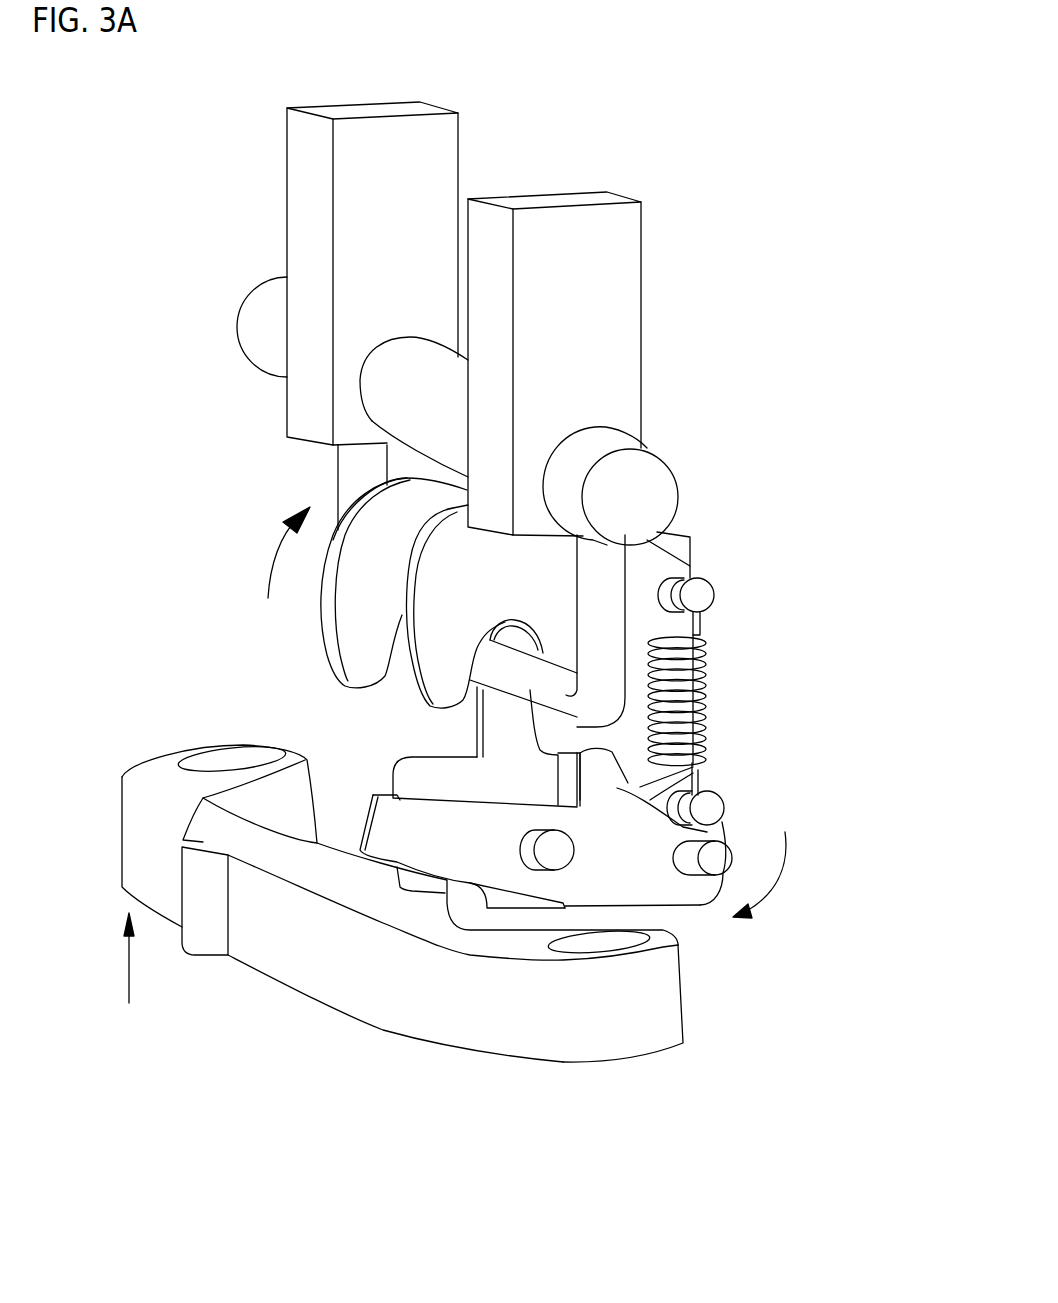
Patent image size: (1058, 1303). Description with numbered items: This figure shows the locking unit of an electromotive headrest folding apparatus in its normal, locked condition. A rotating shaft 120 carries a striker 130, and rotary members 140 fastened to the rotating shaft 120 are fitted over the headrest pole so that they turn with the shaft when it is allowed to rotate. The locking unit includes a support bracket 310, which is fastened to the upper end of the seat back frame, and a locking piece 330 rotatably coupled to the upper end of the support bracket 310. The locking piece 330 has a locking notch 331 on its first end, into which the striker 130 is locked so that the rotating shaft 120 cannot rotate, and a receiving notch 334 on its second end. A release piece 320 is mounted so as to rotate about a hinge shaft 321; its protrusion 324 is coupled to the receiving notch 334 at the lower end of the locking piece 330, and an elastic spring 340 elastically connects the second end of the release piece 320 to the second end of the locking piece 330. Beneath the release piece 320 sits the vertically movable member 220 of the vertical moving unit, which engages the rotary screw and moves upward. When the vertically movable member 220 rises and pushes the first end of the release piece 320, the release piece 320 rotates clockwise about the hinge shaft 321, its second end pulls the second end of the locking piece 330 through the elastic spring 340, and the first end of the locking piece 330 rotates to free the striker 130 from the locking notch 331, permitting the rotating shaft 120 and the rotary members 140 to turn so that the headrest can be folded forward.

The rotating shaft 120 is at (263, 322).
The striker 130 is at (597, 618).
The rotary members 140 is at (607, 317).
The vertically movable member 220 is at (307, 947).
The support bracket 310 is at (487, 782).
The release piece 320 is at (650, 863).
The hinge shaft 321 is at (553, 850).
The protrusion 324 is at (693, 773).
The locking piece 330 is at (697, 622).
The locking notch 331 is at (388, 688).
The receiving notch 334 is at (720, 838).
The elastic spring 340 is at (703, 652).